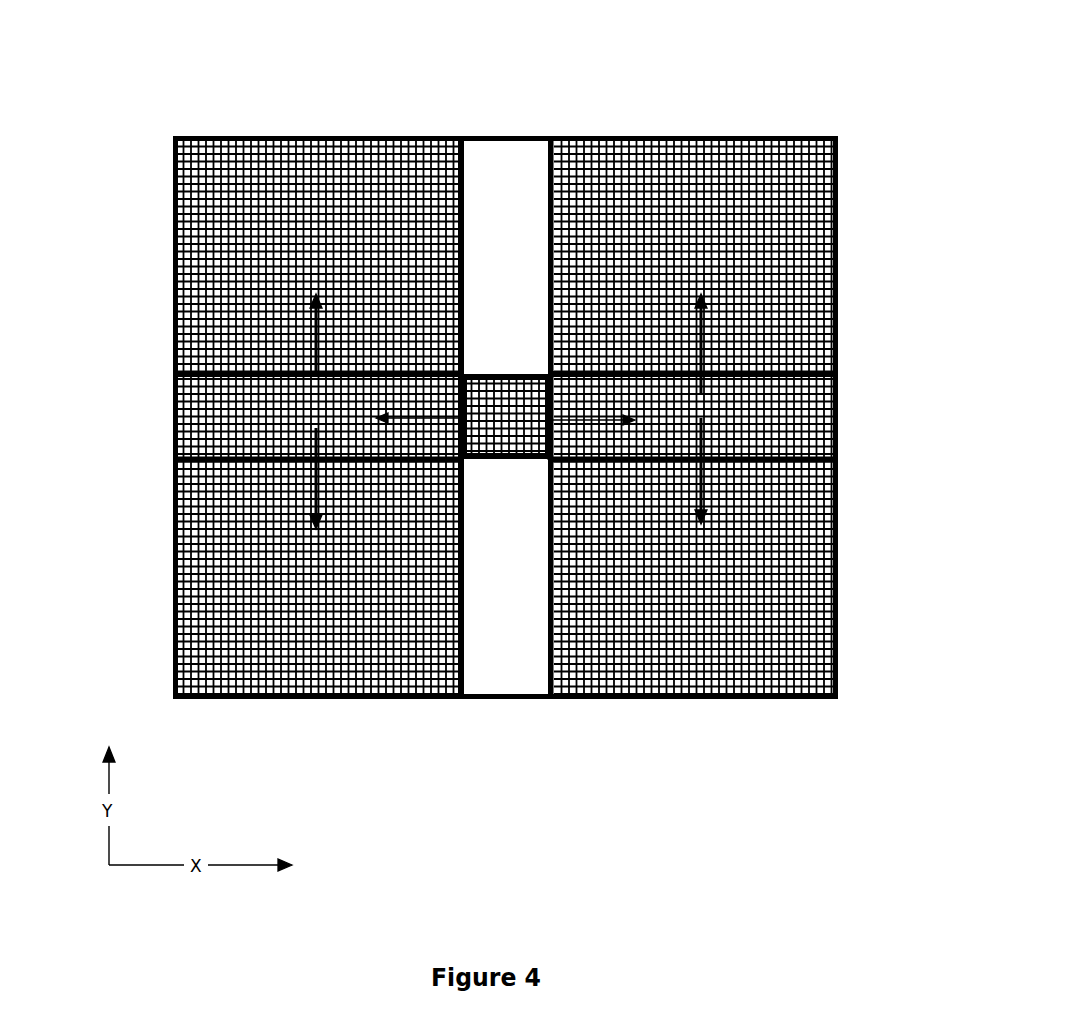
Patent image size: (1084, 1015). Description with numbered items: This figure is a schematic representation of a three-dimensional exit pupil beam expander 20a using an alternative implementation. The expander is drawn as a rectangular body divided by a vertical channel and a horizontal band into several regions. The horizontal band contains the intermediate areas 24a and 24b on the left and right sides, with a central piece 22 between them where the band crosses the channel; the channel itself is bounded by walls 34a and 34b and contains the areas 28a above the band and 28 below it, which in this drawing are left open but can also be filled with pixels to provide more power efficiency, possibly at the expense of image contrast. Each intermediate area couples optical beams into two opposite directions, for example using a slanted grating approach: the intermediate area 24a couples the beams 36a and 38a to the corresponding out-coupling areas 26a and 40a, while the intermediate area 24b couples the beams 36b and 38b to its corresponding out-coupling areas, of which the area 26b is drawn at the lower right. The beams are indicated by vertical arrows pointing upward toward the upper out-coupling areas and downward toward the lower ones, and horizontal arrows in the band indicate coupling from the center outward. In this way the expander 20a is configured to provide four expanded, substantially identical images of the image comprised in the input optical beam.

The 3-dimensional exit pupil beam expander 20a is at (480, 52).
The central connecting piece 22 is at (470, 390).
The intermediate area 24a is at (185, 432).
The intermediate area 24b is at (795, 415).
The out-coupling area 26a is at (277, 663).
The out-coupling area 26b is at (705, 665).
The area 28 is at (505, 668).
The area 28a is at (497, 160).
The left channel wall 34a is at (456, 468).
The right channel wall 34b is at (540, 528).
The beam 36a is at (300, 500).
The beam 36b is at (697, 490).
The beam 38a is at (305, 300).
The beam 38b is at (700, 330).
The out-coupling area 40a is at (166, 130).